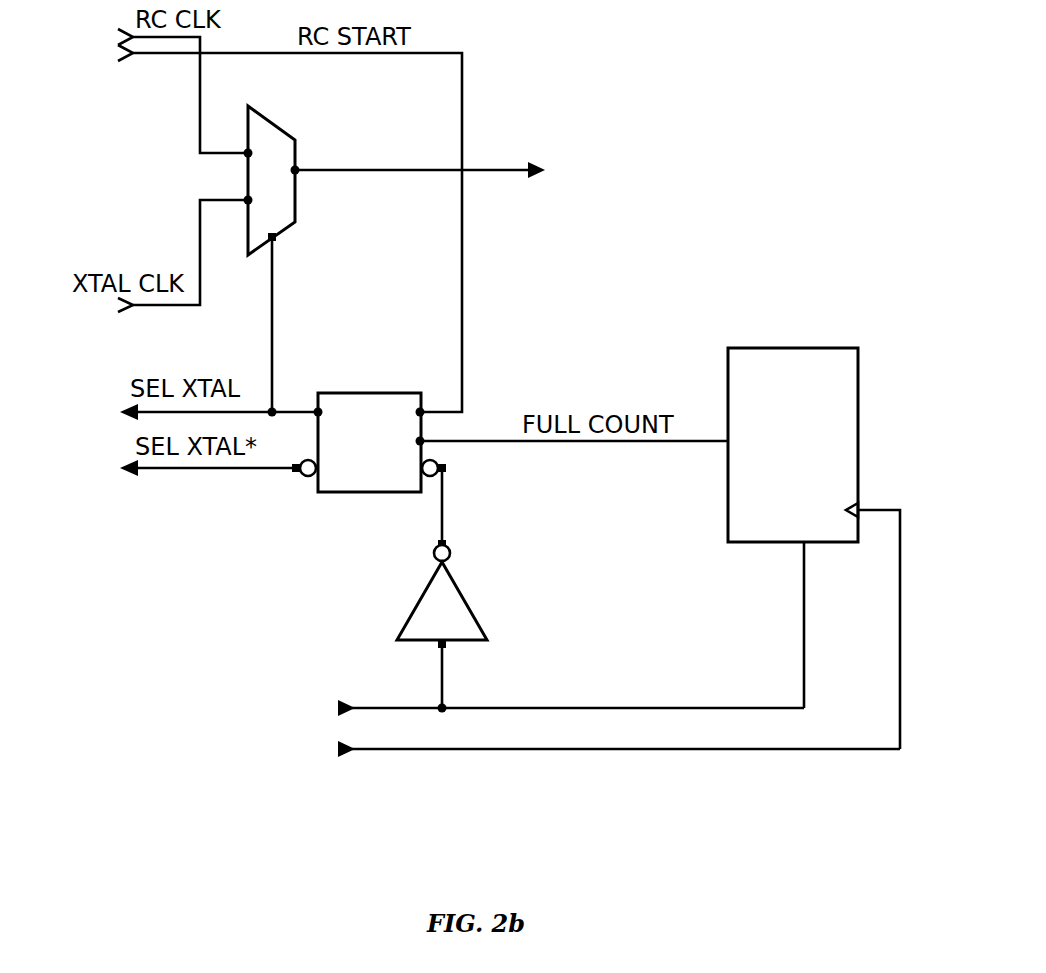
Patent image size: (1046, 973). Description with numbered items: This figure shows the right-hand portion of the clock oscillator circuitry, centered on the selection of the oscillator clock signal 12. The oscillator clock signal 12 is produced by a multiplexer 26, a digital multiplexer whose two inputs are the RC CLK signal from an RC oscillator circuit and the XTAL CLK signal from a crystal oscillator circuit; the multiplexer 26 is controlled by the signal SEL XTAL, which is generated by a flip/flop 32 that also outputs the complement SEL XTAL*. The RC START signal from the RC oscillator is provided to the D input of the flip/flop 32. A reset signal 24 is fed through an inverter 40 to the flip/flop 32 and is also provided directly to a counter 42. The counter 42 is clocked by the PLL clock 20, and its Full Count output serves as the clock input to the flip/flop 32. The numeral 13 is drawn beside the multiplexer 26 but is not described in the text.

The multiplexer (MUX) 13 is at (299, 155).
The multiplexer 26 is at (280, 128).
The oscillator clock signal 12 is at (492, 170).
The flip/flop 32 is at (382, 393).
The counter 42 is at (818, 503).
The inverter 40 is at (468, 602).
The reset signal 24 is at (393, 707).
The PLL clock 20 is at (412, 749).